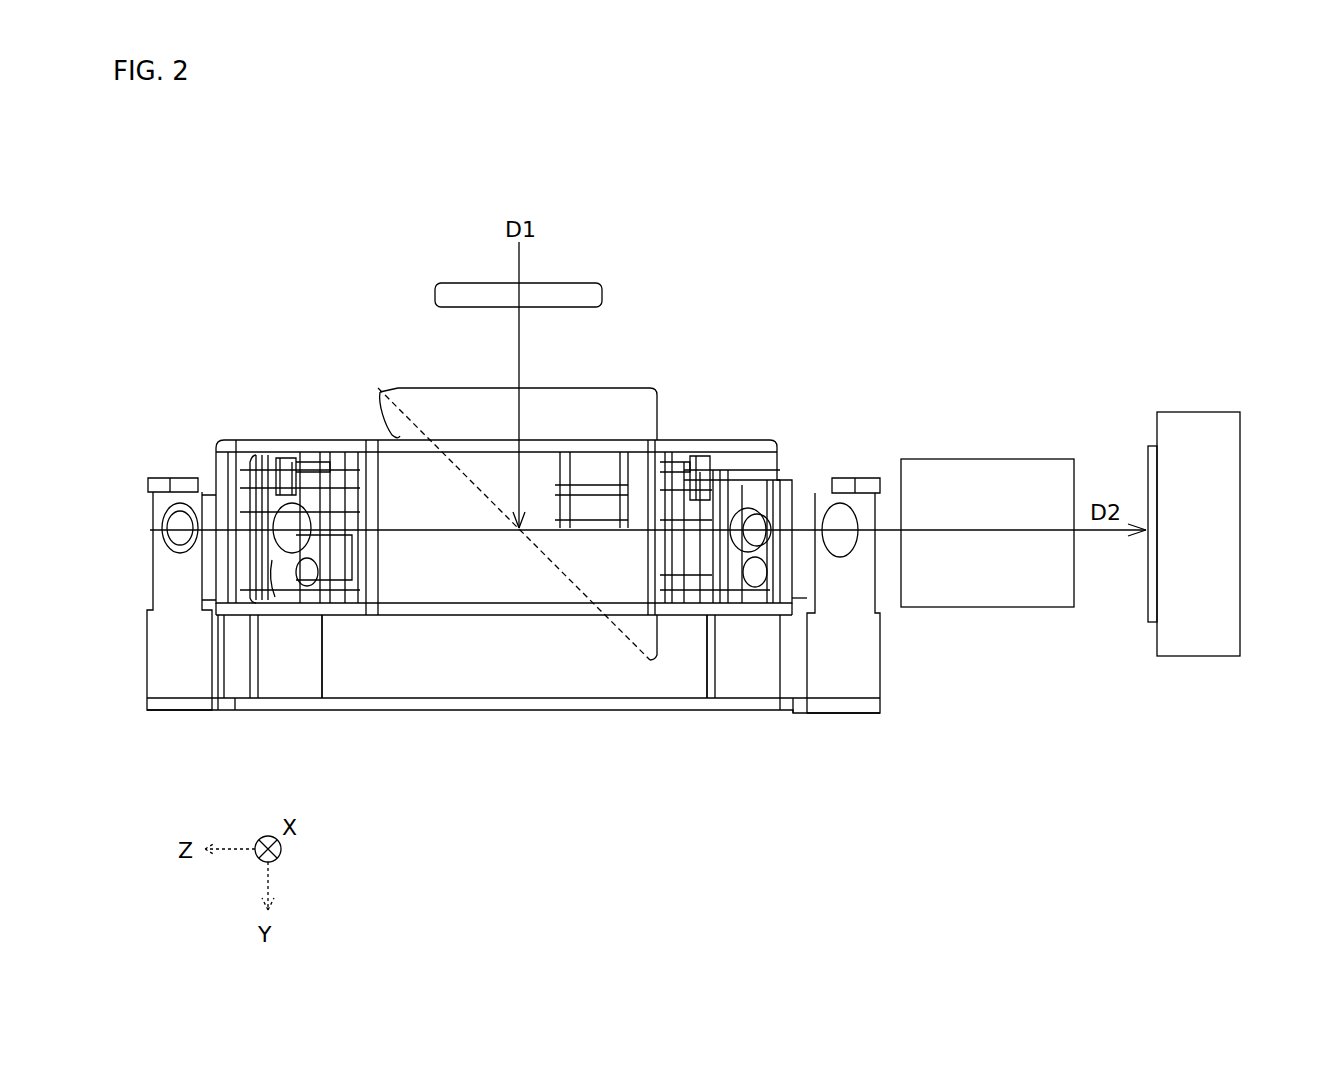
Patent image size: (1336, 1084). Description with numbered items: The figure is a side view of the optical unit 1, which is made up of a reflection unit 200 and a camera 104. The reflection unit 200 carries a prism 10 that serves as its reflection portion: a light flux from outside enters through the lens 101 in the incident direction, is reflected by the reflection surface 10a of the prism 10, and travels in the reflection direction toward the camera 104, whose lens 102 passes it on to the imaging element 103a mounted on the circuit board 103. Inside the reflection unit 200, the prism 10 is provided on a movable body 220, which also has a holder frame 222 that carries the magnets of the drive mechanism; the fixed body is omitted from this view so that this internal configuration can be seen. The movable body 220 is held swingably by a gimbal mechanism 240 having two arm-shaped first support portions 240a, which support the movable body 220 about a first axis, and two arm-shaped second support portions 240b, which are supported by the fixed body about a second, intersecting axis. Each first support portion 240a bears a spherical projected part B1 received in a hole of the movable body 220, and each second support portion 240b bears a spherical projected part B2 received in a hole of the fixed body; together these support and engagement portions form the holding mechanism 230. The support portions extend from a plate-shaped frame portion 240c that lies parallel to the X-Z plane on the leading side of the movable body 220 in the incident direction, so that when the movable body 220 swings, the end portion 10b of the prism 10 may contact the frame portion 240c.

The optical unit 1 is at (890, 276).
The prism 10 is at (630, 388).
The reflection surface 10a is at (383, 417).
The +Y direction-side end portion 10b is at (650, 660).
The lens 101 is at (594, 274).
The lens 102 is at (1040, 420).
The circuit board 103 is at (1188, 398).
The imaging element 103a is at (1145, 622).
The camera 104 is at (1287, 312).
The reflection unit 200 is at (722, 402).
The movable body 220 is at (238, 436).
The holder frame 222 is at (258, 452).
The holding mechanism 230 is at (172, 465).
The gimbal mechanism 240 is at (578, 711).
The first support portion 240a is at (292, 640).
The second support portion 240b is at (175, 697).
The frame portion 240c is at (355, 710).
The projected part B1 is at (790, 490).
The projected part B2 is at (170, 530).